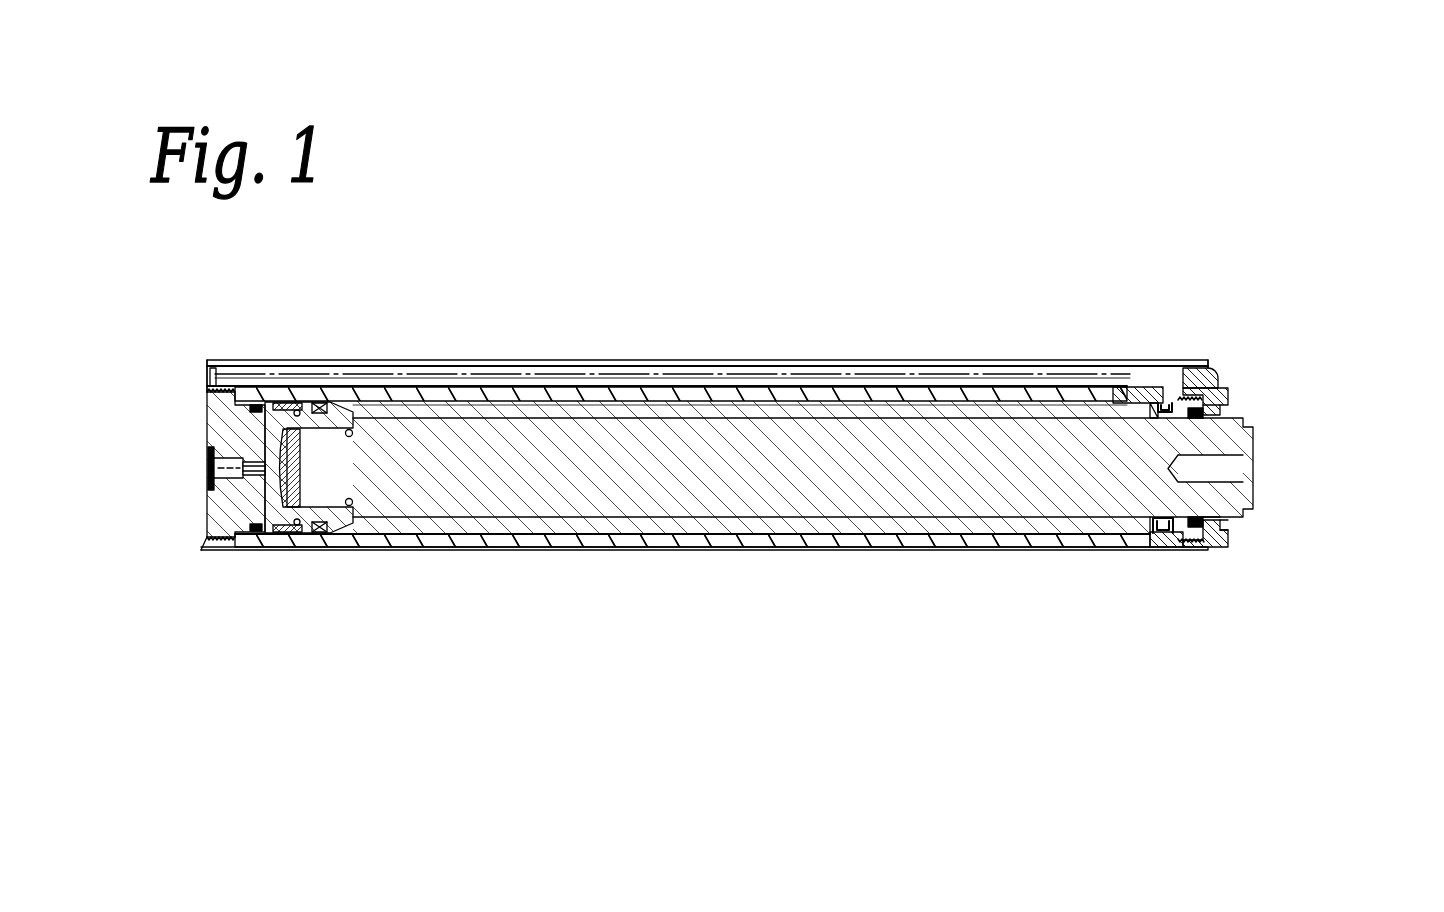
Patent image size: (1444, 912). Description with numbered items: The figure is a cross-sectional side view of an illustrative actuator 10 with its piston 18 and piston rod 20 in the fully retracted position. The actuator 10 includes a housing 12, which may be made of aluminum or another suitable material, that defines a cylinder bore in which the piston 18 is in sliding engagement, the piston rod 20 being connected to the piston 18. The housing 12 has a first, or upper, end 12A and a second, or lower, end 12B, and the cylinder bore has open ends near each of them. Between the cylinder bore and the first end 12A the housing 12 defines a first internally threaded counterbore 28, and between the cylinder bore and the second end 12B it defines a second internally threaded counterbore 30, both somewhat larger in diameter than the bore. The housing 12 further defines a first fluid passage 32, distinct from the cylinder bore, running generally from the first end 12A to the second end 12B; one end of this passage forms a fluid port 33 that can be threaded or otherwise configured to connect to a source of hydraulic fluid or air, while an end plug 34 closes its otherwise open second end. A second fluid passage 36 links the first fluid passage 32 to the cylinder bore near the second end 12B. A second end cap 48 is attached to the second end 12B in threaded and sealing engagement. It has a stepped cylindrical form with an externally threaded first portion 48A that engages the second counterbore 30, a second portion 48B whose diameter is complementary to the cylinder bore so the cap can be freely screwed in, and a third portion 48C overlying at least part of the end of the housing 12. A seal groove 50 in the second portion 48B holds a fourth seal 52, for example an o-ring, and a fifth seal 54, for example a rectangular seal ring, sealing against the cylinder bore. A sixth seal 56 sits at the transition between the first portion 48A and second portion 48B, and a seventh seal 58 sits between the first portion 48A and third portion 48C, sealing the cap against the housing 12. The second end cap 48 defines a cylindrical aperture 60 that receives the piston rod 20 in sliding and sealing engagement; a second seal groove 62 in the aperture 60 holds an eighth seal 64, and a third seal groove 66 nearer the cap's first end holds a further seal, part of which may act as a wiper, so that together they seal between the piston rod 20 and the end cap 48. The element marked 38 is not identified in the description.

The actuator 10 is at (300, 296).
The housing 12 is at (547, 365).
The first end 12A is at (125, 345).
The second end 12B is at (1313, 302).
The piston 18 is at (338, 410).
The piston rod 20 is at (1228, 505).
The first internally threaded counterbore 28 is at (216, 550).
The second internally threaded counterbore 30 is at (1196, 550).
The first fluid passage 32 is at (748, 387).
The fluid port 33 is at (199, 380).
The end plug 34 is at (1218, 395).
The second fluid passage 36 is at (1142, 395).
The end plug 38 is at (207, 420).
The second end cap 48 is at (1228, 395).
The first portion 48A is at (1192, 540).
The second portion 48B is at (1168, 536).
The third portion 48C is at (1210, 552).
The seal groove 50 is at (1181, 389).
The fourth seal 52 is at (1162, 405).
The fifth seal 54 is at (1164, 405).
The sixth seal 56 is at (1183, 540).
The seventh seal 58 is at (1205, 552).
The aperture 60 is at (1177, 518).
The second seal groove 62 is at (1218, 520).
The eighth seal 64 is at (1190, 520).
The third seal groove 66 is at (1230, 525).